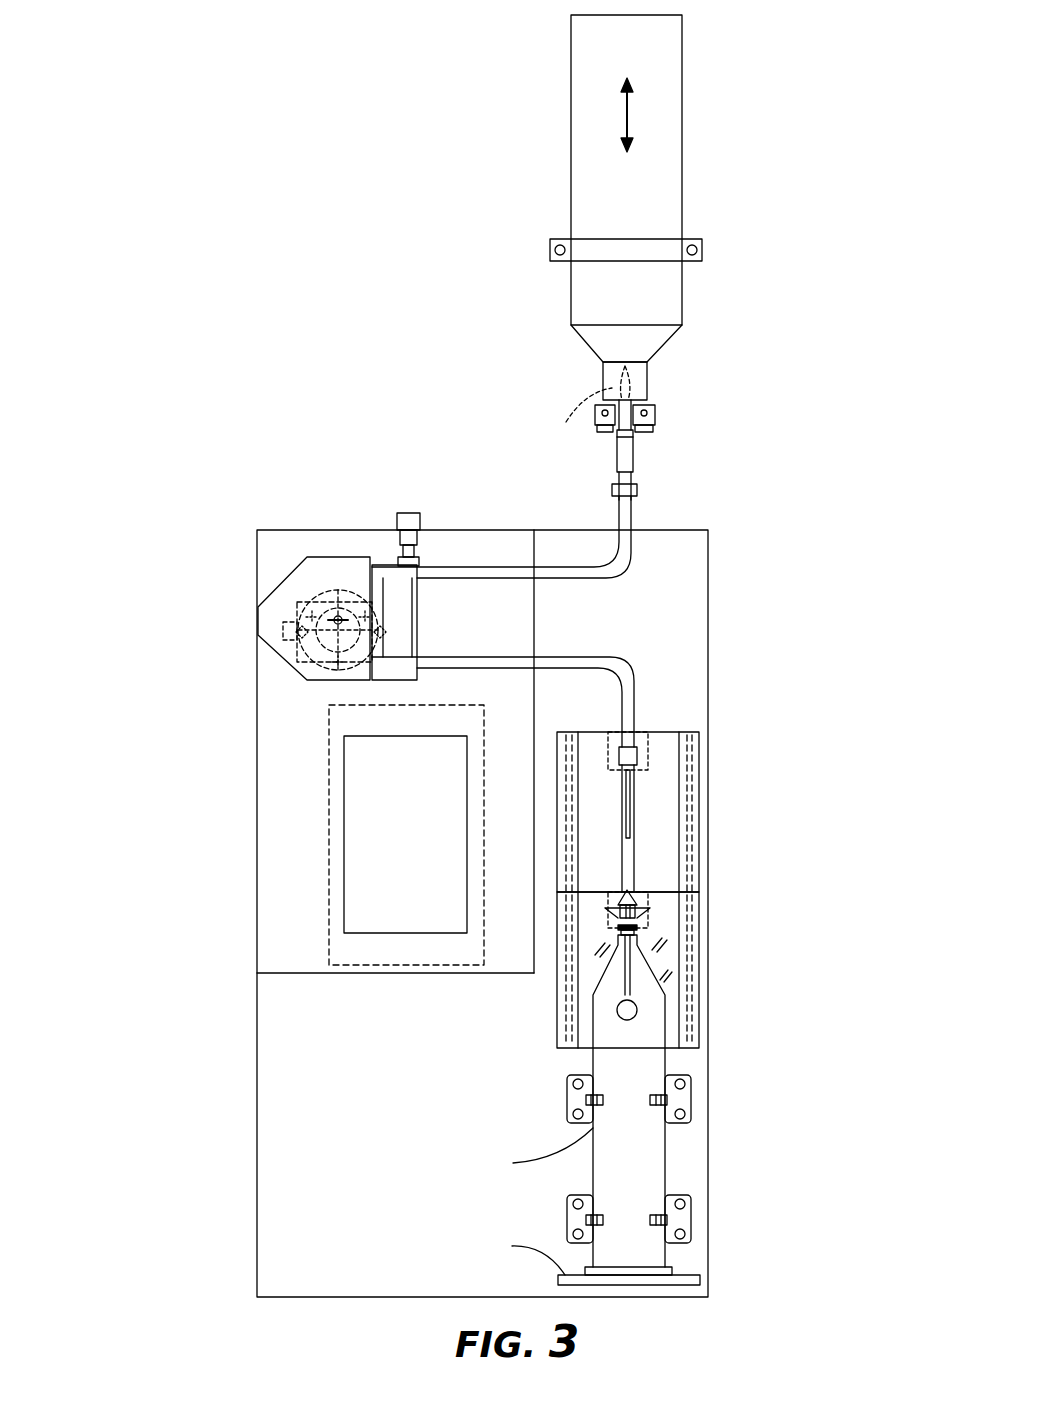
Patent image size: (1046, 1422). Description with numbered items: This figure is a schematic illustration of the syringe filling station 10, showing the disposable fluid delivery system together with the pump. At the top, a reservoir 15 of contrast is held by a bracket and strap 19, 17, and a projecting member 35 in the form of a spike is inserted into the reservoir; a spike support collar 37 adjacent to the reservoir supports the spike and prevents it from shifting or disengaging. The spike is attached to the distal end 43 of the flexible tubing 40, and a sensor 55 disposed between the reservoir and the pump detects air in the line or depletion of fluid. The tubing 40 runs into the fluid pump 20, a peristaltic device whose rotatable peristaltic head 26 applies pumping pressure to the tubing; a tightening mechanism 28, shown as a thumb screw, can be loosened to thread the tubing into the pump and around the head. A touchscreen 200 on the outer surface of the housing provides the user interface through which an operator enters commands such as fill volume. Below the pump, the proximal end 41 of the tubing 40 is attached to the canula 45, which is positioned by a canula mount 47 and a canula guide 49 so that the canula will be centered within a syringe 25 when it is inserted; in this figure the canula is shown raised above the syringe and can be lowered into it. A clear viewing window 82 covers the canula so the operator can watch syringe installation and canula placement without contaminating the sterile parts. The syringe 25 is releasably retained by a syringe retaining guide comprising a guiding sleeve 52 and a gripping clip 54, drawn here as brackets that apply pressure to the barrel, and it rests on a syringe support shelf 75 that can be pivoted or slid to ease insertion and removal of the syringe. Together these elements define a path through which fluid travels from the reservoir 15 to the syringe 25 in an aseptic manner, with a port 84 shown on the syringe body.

The filling station 10 is at (130, 482).
The reservoir 15 is at (673, 190).
The container support strap 19 is at (675, 243).
The container bracket 17 is at (703, 252).
The projecting member 35 is at (617, 437).
The spike support collar 37 is at (655, 415).
The distal end 43 is at (606, 481).
The sensor 55 is at (640, 490).
The flexible tubing 40 is at (616, 577).
The fluid pump 20 is at (302, 675).
The peristaltic head 26 is at (330, 625).
The tightening mechanism 28 is at (402, 516).
The touchscreen 200 is at (348, 888).
The guiding sleeve 52 is at (578, 987).
The gripping clip 54 is at (688, 1100).
The proximal end 41 is at (628, 873).
The canula mount 47 is at (650, 904).
The canula guide 49 is at (640, 917).
The viewing window 82 is at (670, 975).
The canula 45 is at (635, 990).
The port 84 is at (636, 1015).
The syringe 25 is at (640, 1142).
The syringe support shelf 75 is at (702, 1280).